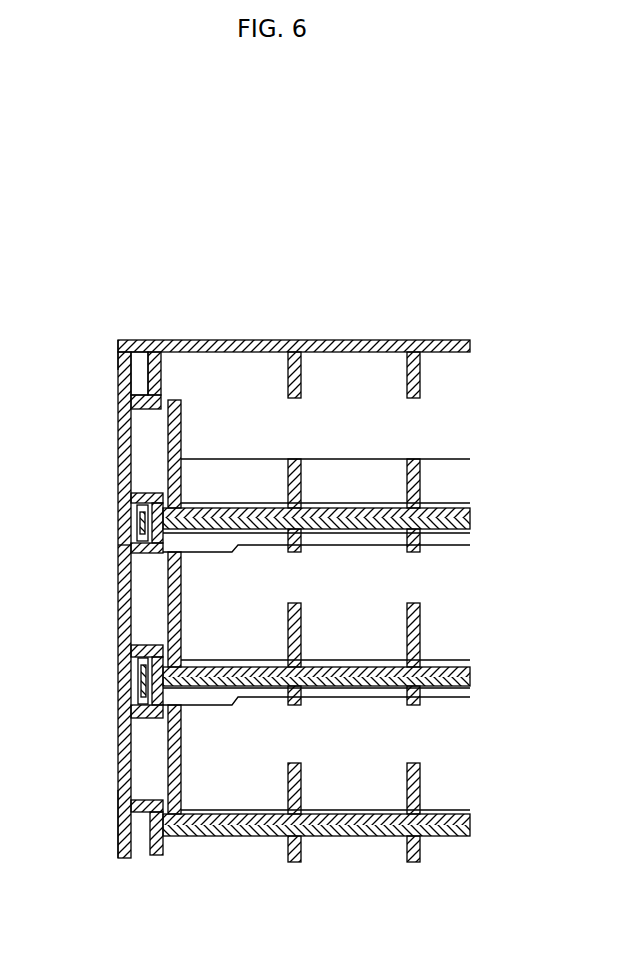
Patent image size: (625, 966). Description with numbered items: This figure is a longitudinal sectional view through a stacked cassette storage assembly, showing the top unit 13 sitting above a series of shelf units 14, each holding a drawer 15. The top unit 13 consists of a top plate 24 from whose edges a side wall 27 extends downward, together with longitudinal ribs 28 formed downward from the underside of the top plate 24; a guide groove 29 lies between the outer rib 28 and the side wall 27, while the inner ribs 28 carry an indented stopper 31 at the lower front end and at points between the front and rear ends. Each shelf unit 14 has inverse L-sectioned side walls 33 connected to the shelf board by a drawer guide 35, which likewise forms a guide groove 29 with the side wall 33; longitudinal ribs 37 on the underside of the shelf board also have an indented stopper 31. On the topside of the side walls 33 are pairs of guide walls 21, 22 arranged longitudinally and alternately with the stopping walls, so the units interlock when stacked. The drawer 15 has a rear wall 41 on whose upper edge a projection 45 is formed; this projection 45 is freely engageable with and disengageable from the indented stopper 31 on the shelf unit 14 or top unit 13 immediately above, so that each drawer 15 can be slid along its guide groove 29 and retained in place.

The top unit 13 is at (306, 547).
The shelf unit 14 is at (107, 466).
The drawer 15 is at (468, 500).
The guide wall 21 is at (140, 705).
The guide wall 22 is at (118, 381).
The top plate 24 is at (256, 340).
The side wall 27 is at (118, 368).
The longitudinal rib 28 is at (163, 365).
The guide groove 29 is at (151, 352).
The indented stopper 31 is at (301, 388).
The side wall 33 is at (119, 798).
The drawer guide 35 is at (165, 840).
The longitudinal rib 37 is at (305, 838).
The rear wall 41 is at (455, 585).
The projection 45 is at (455, 545).